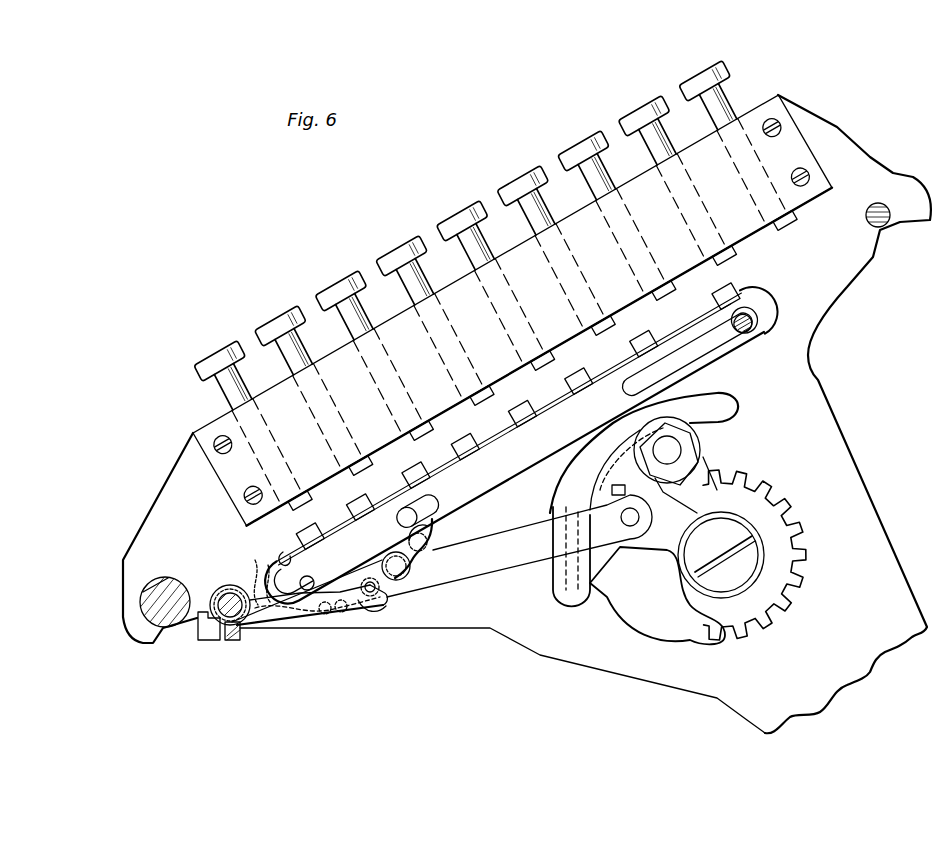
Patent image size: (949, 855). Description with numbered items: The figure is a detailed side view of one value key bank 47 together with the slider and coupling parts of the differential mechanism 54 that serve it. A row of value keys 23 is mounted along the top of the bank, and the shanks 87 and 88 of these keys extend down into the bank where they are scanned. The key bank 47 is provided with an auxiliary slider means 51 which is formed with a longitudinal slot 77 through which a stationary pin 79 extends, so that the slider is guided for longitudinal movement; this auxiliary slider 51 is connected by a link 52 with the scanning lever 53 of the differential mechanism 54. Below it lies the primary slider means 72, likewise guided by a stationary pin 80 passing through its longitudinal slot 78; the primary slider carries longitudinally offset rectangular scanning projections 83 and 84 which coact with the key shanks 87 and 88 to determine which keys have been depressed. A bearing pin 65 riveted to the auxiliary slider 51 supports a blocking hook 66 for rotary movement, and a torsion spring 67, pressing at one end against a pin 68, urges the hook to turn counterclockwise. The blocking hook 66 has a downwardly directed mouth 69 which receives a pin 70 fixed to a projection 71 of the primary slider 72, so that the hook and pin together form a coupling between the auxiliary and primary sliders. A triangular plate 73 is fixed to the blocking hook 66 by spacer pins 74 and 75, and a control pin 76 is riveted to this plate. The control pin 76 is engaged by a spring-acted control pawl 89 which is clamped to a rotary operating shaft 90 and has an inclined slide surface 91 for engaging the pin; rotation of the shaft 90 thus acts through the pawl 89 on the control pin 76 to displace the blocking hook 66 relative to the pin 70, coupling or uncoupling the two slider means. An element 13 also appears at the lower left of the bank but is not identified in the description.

The shaft 13 is at (172, 627).
The value keys 23 is at (226, 348).
The value key bank 47 is at (148, 532).
The auxiliary slider means 51 is at (511, 470).
The link 52 is at (466, 566).
The scanning lever 53 is at (652, 540).
The differential mechanism 54 is at (707, 585).
The bearing pin 65 is at (411, 578).
The blocking hook 66 is at (388, 596).
The torsion spring 67 is at (428, 527).
The pin 68 is at (436, 536).
The mouth 69 is at (326, 614).
The pin 70 is at (342, 612).
The projection 71 is at (366, 614).
The primary slider means 72 is at (243, 567).
The triangular plate 73 is at (297, 595).
The spacer pin 74 is at (320, 618).
The spacer pin 75 is at (363, 560).
The control pin 76 is at (280, 560).
The longitudinal slot 77 is at (347, 543).
The longitudinal slot 78 is at (712, 346).
The stationary pin 79 is at (403, 507).
The stationary pin 80 is at (748, 312).
The scanning projection 83 is at (468, 443).
The scanning projection 84 is at (526, 412).
The shank 87 is at (430, 428).
The shank 88 is at (492, 397).
The control pawl 89 is at (256, 622).
The rotary operating shaft 90 is at (218, 592).
The inclined slide surface 91 is at (306, 576).